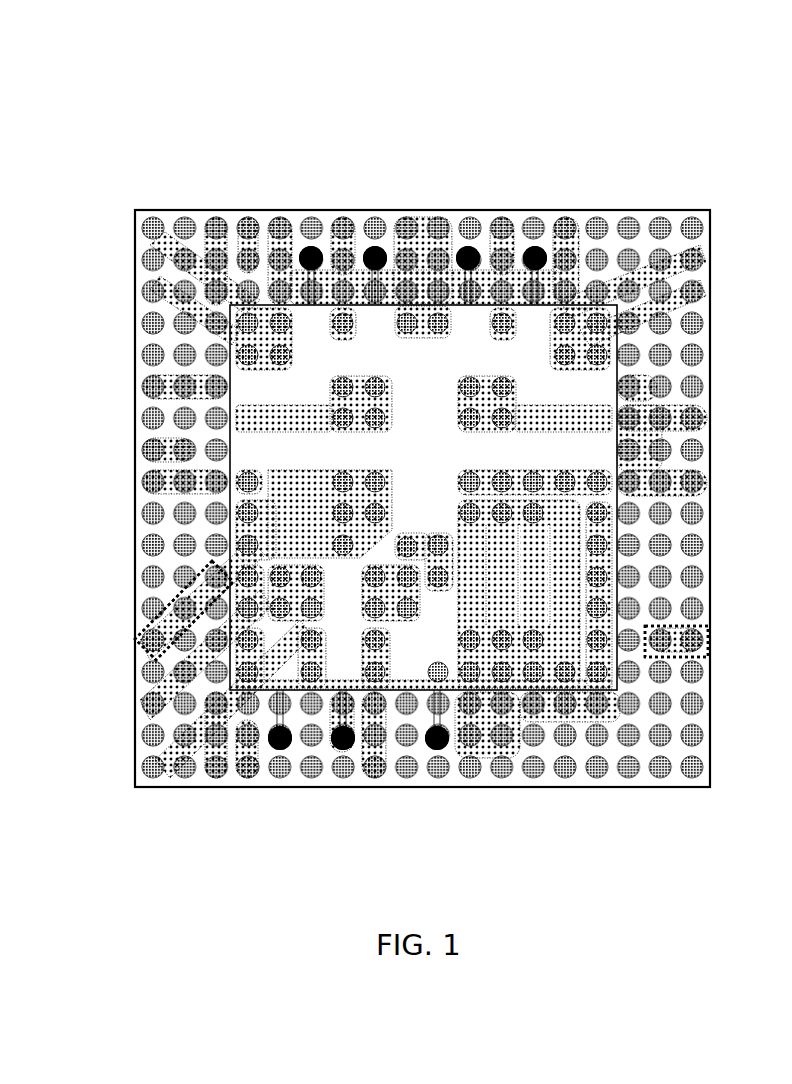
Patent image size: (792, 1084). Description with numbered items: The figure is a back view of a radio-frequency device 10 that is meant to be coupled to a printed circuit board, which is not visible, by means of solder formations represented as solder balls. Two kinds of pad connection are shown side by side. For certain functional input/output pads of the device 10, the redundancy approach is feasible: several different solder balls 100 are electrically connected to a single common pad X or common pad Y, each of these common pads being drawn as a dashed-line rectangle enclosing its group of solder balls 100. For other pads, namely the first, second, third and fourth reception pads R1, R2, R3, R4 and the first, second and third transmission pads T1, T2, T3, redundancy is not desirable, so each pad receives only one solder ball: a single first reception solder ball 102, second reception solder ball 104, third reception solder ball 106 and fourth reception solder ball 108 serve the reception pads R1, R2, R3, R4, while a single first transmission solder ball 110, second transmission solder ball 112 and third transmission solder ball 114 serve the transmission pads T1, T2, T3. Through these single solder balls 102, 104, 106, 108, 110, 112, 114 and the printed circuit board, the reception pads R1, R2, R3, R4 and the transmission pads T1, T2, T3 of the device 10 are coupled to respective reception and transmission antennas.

The device 10 is at (690, 112).
The solder balls 100 is at (208, 578).
The first reception solder ball 102 is at (303, 251).
The second reception solder ball 104 is at (373, 270).
The third reception solder ball 106 is at (466, 270).
The fourth reception solder ball 108 is at (532, 270).
The first transmission solder ball 110 is at (276, 750).
The second transmission solder ball 112 is at (350, 750).
The third transmission solder ball 114 is at (445, 752).
The first reception pad R1 is at (313, 240).
The second reception pad R2 is at (380, 240).
The third reception pad R3 is at (472, 240).
The fourth reception pad R4 is at (540, 240).
The first transmission pad T1 is at (285, 758).
The second transmission pad T2 is at (350, 758).
The third transmission pad T3 is at (440, 758).
The common pad X is at (710, 610).
The common pad Y is at (135, 662).